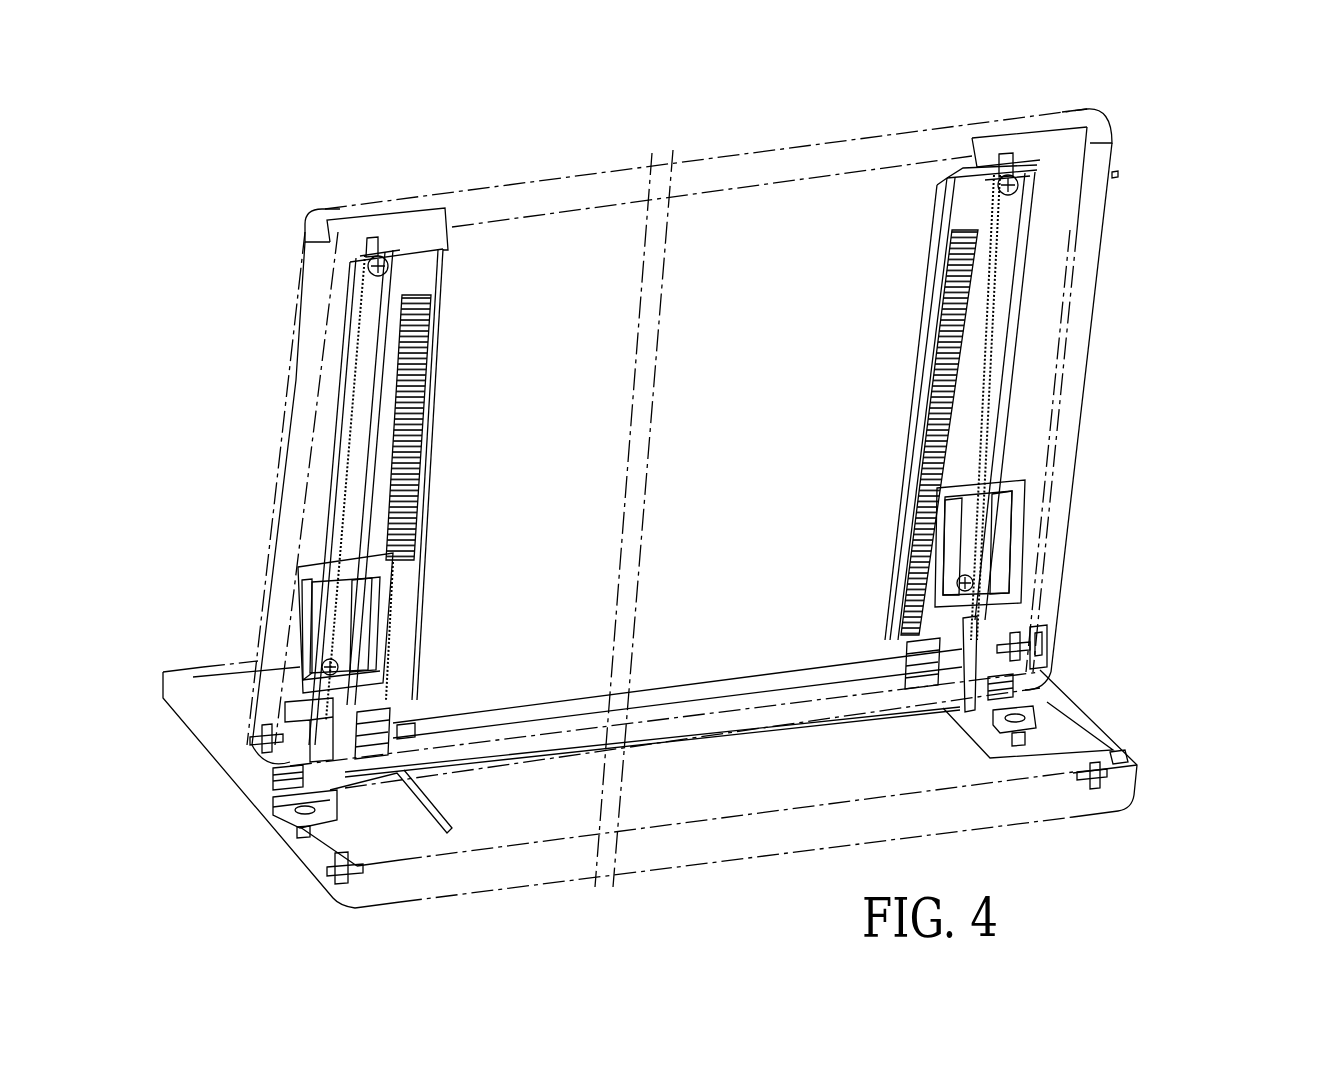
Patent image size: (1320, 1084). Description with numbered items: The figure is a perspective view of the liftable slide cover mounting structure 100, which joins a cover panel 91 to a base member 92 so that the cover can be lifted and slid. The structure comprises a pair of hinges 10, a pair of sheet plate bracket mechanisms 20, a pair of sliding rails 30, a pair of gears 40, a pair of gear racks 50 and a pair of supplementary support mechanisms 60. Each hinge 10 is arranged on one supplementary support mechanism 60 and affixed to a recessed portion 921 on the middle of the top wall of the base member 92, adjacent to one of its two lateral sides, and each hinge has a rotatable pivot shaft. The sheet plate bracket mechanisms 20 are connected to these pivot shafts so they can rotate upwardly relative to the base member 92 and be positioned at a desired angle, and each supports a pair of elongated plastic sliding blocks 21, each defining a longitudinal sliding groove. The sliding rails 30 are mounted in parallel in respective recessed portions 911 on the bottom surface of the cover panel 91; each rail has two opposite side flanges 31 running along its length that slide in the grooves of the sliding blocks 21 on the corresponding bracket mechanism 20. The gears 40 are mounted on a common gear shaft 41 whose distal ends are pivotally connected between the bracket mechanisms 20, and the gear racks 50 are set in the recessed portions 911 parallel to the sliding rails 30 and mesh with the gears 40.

The liftable slide cover mounting structure 100 is at (1135, 380).
The cover panel 91 is at (1114, 176).
The recessed portion 911 is at (340, 225).
The base member 92 is at (1125, 795).
The recessed portion 921 is at (320, 812).
The hinge 10 is at (273, 783).
The sheet plate bracket mechanism 20 is at (300, 640).
The elongated plastic sliding block 21 is at (312, 610).
The sliding rail 30 is at (365, 355).
The side flange 31 is at (395, 263).
The gear 40 is at (397, 722).
The gear shaft 41 is at (530, 710).
The gear rack 50 is at (430, 402).
The supplementary support mechanism 60 is at (276, 831).